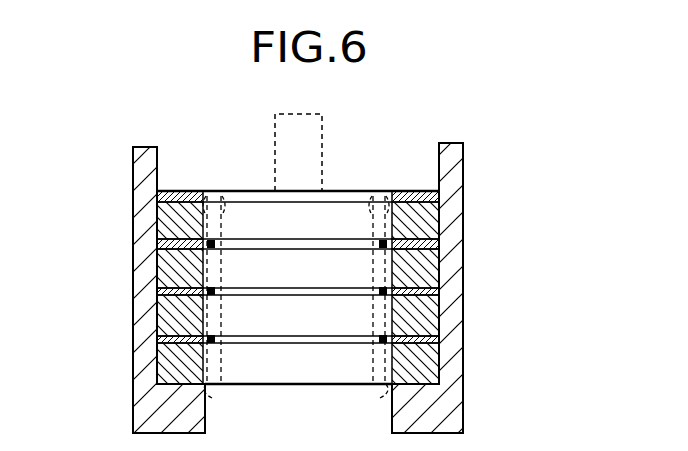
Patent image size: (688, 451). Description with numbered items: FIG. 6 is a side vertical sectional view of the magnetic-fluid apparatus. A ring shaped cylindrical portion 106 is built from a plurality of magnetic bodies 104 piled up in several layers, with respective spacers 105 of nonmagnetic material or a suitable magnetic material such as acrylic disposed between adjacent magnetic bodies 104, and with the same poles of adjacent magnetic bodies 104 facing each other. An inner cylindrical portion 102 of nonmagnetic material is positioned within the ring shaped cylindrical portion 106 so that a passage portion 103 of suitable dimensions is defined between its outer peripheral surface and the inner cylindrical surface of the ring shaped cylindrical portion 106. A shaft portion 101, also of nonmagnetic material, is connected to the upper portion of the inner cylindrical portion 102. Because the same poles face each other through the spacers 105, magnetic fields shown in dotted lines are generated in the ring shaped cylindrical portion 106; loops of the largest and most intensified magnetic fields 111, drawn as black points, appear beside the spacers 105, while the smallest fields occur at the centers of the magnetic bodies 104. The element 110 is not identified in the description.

The shaft portion 101 is at (322, 128).
The inner cylindrical portion 102 is at (296, 386).
The passage portion 103 is at (211, 194).
The magnetic bodies 104 is at (160, 217).
The spacers 105 is at (178, 191).
The ring shaped cylindrical portion 106 is at (440, 318).
The spacer block 110 is at (231, 198).
The loops of largest and most intensified magnetic fields 111 is at (216, 258).